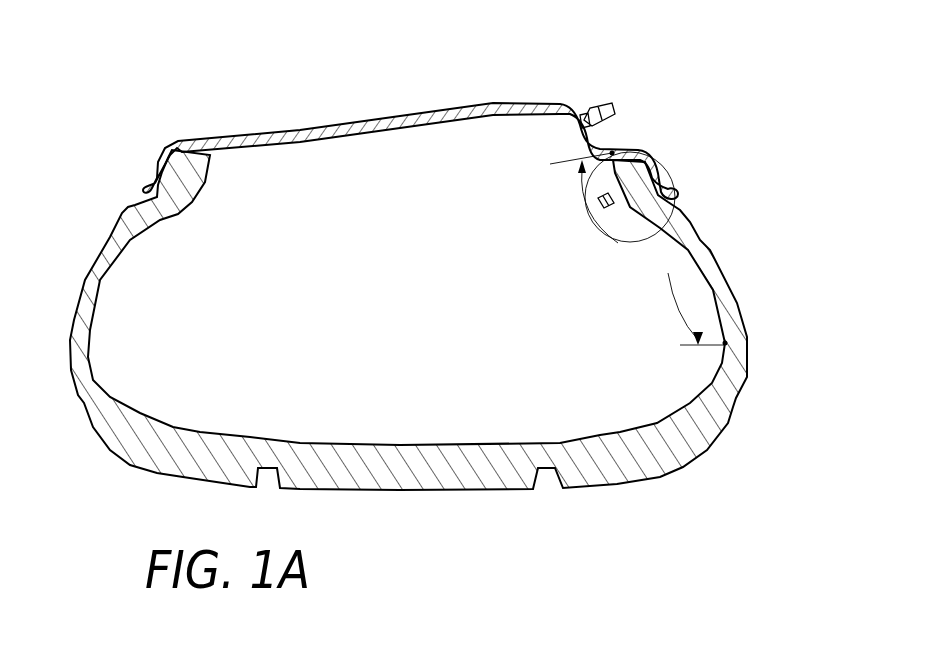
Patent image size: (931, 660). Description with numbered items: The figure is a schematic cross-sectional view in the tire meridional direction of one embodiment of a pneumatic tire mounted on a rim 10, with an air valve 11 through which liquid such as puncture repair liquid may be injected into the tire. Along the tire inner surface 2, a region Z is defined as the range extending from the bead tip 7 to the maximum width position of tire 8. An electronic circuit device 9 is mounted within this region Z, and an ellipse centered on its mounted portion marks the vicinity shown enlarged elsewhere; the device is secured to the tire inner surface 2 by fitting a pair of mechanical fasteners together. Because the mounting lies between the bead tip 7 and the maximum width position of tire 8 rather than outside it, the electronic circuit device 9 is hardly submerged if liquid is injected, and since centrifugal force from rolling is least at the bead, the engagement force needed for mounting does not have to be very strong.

The tire inner surface 2 is at (160, 222).
The bead tip 7 is at (612, 152).
The maximum width position of tire 8 is at (745, 322).
The electronic circuit device 9 is at (584, 208).
The rim 10 is at (398, 118).
The air valve 11 is at (583, 118).
The region Z is at (570, 192).